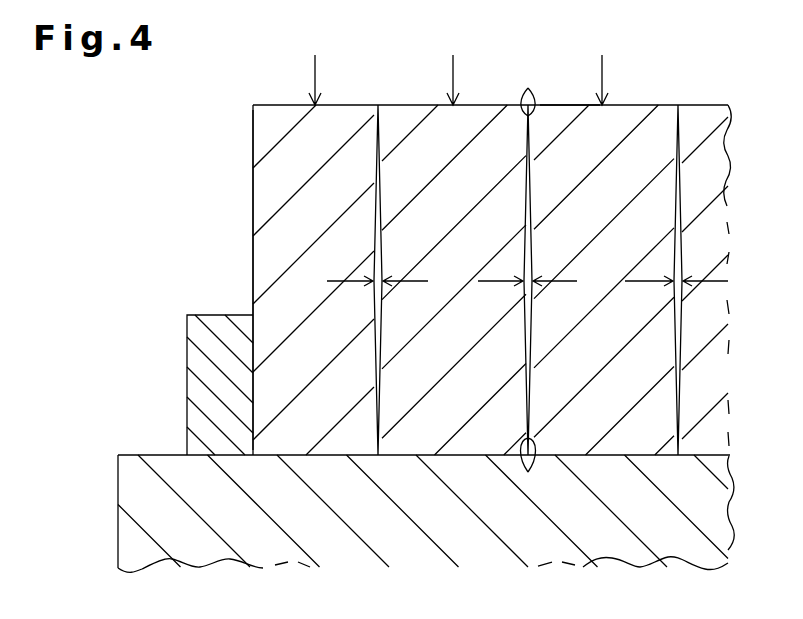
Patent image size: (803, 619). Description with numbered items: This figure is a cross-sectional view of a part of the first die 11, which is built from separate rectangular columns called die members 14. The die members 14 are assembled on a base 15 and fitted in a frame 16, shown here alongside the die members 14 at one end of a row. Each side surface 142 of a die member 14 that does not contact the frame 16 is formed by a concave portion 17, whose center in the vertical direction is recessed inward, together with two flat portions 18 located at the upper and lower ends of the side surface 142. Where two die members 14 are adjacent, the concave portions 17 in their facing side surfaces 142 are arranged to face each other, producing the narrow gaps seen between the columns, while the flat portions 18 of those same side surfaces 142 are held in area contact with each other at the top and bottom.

The first die 11 is at (686, 85).
The die member 14 is at (388, 107).
The side surface 142 is at (253, 192).
The base 15 is at (152, 455).
The frame 16 is at (195, 356).
The concave portion 17 is at (532, 250).
The flat portion 18 is at (529, 283).